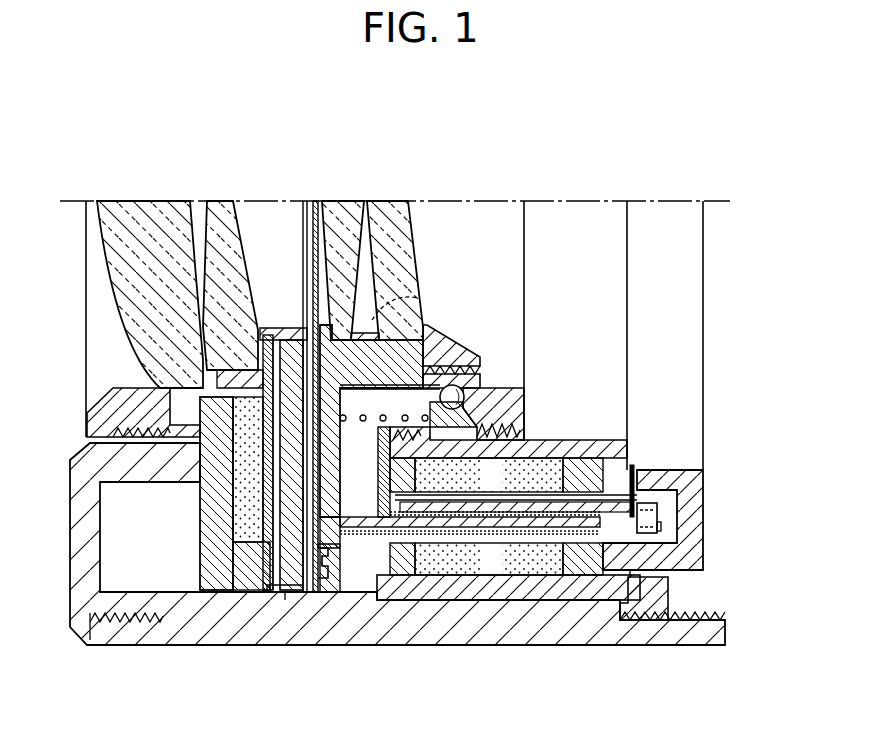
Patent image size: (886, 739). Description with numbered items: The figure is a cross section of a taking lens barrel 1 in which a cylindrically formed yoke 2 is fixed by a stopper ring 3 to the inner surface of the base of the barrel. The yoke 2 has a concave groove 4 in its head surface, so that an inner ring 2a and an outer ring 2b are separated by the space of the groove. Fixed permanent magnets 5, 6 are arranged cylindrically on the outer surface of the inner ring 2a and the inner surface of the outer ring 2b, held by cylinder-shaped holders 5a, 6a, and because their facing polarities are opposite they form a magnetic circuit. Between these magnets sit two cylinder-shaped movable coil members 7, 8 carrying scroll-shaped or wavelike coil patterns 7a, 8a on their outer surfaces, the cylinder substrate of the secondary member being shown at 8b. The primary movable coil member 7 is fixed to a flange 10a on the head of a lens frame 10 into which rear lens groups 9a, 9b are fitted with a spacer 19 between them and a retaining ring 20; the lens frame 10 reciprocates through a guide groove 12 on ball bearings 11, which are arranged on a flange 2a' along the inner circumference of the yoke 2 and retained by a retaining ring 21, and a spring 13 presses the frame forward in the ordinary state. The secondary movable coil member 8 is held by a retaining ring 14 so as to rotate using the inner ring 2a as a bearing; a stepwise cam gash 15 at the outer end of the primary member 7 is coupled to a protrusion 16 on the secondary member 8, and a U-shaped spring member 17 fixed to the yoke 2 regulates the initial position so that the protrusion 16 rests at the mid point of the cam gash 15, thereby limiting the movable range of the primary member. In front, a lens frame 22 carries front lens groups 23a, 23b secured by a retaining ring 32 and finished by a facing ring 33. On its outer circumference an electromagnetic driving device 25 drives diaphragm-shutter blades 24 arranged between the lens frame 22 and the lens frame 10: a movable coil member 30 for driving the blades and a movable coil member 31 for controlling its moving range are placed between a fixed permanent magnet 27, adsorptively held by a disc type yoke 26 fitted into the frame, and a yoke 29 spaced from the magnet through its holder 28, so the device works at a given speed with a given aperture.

The taking lens barrel 1 is at (553, 632).
The yoke 2 is at (693, 498).
The inner ring 2a is at (482, 471).
The flange 2a' is at (498, 408).
The outer ring 2b is at (488, 590).
The stopper ring 3 is at (658, 594).
The concave groove 4 is at (447, 575).
The fixed permanent magnet 5 is at (553, 470).
The cylinder-shaped holder 5a is at (580, 467).
The fixed permanent magnet 6 is at (530, 565).
The cylinder-shaped holder 6a is at (586, 567).
The primary movable coil member 7 is at (323, 557).
The coil pattern 7a is at (381, 589).
The secondary movable coil member 8 is at (608, 505).
The coil pattern 8a is at (604, 482).
The wheel 8b is at (388, 502).
The rear lens group 9a is at (345, 208).
The rear lens group 9b is at (392, 208).
The lens frame 10 is at (398, 343).
The flange 10a is at (380, 488).
The ball bearings 11 is at (465, 393).
The guide groove 12 is at (467, 372).
The spring 13 is at (363, 422).
The retaining ring 14 is at (397, 501).
The stepwise cam gash 15 is at (648, 550).
The protrusion 16 is at (623, 532).
The spring member 17 is at (637, 485).
The spacer 19 is at (372, 320).
The retaining ring 20 is at (452, 348).
The retaining ring 21 is at (497, 425).
The lens frame 22 is at (182, 432).
The front lens group 23a is at (148, 205).
The front lens group 23b is at (220, 205).
The diaphragm-shutter blades 24 is at (308, 580).
The electromagnetic driving device 25 is at (287, 590).
The disc type yoke 26 is at (212, 553).
The fixed permanent magnet 27 is at (235, 527).
The holder 28 is at (233, 572).
The yoke 29 is at (293, 595).
The movable coil member 30 is at (265, 562).
The movable coil member 31 is at (278, 562).
The retaining ring 32 is at (113, 413).
The facing ring 33 is at (80, 568).